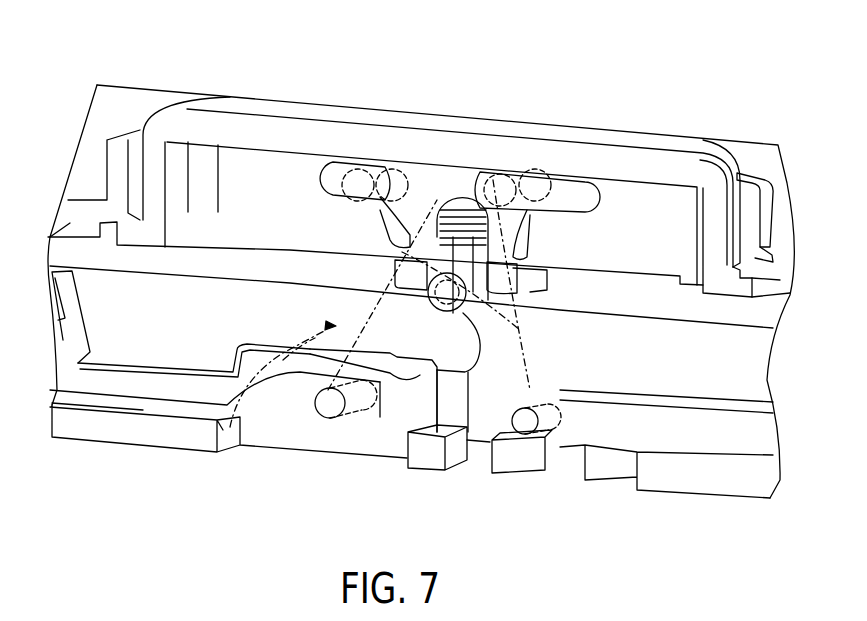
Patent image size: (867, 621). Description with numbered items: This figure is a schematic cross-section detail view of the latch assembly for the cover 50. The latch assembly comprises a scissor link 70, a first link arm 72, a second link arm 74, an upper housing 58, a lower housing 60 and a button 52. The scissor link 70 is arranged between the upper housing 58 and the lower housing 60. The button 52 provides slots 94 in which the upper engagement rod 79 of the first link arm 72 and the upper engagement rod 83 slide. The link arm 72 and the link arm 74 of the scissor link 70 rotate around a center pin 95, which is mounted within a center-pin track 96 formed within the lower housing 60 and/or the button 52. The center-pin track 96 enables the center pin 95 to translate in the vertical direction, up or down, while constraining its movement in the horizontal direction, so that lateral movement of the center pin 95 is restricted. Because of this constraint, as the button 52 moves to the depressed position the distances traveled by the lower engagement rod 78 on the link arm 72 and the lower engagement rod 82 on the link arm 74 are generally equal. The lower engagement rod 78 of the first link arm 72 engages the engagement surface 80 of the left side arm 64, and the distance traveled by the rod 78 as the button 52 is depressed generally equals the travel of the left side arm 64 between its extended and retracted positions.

The cover 50 is at (100, 127).
The button 52 is at (212, 127).
The upper housing 58 is at (70, 223).
The lower housing 60 is at (113, 433).
The left side arm 64 is at (610, 433).
The scissor link 70 is at (228, 432).
The first link arm 72 is at (478, 380).
The second link arm 74 is at (410, 370).
The lower engagement rod 78 is at (527, 437).
The upper engagement rod 79 is at (350, 173).
The engagement surface 80 is at (533, 440).
The lower engagement rod 82 is at (330, 413).
The upper engagement rod 83 is at (498, 187).
The slots 94 is at (330, 173).
The center pin 95 is at (593, 263).
The center-pin track 96 is at (453, 203).